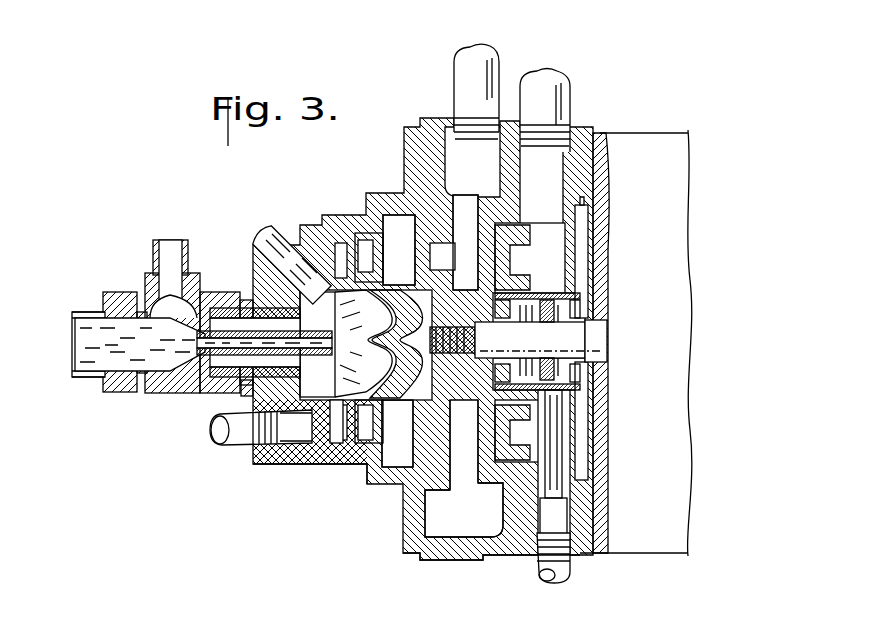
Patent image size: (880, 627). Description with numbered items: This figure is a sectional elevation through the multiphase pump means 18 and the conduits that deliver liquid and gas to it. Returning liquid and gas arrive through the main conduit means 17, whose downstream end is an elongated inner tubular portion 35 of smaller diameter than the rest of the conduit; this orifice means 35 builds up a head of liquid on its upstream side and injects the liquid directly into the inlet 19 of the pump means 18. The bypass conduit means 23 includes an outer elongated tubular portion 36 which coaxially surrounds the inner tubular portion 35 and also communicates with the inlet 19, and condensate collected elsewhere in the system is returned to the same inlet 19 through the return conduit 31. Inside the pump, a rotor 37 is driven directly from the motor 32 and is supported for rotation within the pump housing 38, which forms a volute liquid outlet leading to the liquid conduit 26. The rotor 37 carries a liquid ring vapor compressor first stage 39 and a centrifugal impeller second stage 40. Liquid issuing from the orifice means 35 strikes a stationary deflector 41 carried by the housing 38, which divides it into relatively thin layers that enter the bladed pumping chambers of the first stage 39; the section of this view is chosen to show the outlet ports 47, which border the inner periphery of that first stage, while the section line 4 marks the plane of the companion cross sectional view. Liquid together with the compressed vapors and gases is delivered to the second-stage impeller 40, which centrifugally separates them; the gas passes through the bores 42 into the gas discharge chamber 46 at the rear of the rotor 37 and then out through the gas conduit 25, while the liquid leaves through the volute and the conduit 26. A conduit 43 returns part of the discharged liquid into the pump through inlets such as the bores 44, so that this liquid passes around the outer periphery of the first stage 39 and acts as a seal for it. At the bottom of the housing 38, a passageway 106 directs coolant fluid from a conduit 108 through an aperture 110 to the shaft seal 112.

The main conduit means 17 is at (93, 380).
The multiphase pump means 18 is at (390, 490).
The inlet 19 is at (327, 322).
The bypass conduit means 23 is at (153, 240).
The conduit 25 is at (556, 103).
The conduit 26 is at (470, 90).
The return conduit 31 is at (268, 239).
The motor 32 is at (691, 206).
The inner tubular portion 35 is at (238, 310).
The outer elongated tubular portion 36 is at (247, 397).
The rotor 37 is at (488, 484).
The pump housing 38 is at (504, 557).
The liquid ring vapor compressor first stage 39 is at (411, 264).
The centrifugal impeller second stage 40 is at (462, 264).
The stationary deflector 41 is at (369, 347).
The bores 42 is at (448, 314).
The conduit 43 is at (212, 432).
The bores 44 is at (338, 415).
The gas discharge chamber 46 is at (552, 264).
The outlet ports 47 is at (408, 314).
The passageway 106 is at (556, 458).
The conduit 108 is at (563, 584).
The aperture 110 is at (556, 384).
The shaft seal 112 is at (552, 299).
The section line 4 is at (262, 343).